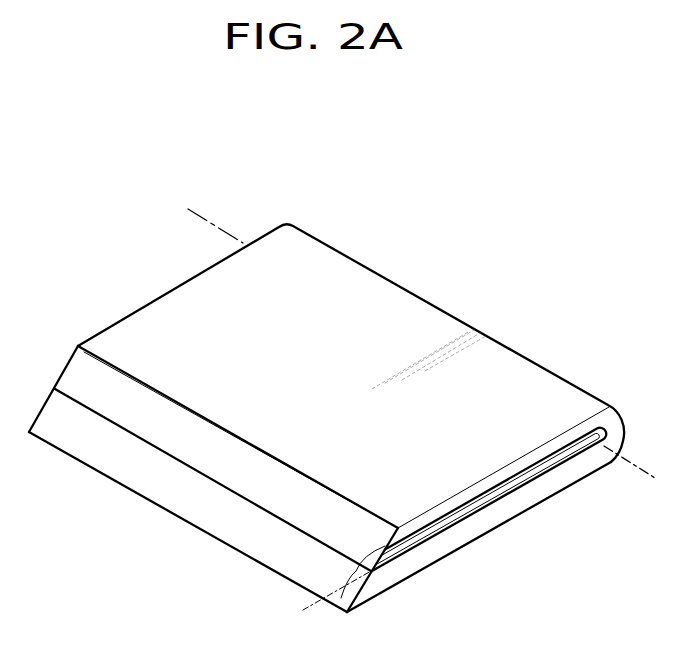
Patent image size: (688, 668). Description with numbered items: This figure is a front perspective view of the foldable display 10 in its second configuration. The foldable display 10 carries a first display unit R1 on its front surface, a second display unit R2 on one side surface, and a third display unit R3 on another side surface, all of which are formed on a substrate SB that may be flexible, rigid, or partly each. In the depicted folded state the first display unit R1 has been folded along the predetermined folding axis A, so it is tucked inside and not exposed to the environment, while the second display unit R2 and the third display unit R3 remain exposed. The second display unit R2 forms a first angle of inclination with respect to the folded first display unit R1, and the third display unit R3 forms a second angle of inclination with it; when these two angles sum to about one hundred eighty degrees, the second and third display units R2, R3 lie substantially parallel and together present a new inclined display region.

The foldable display 10 is at (446, 262).
The third display unit R3 is at (213, 480).
The second display unit R2 is at (188, 522).
The first display unit R1 is at (576, 451).
The substrate SB is at (480, 527).
The folding axis A is at (636, 469).